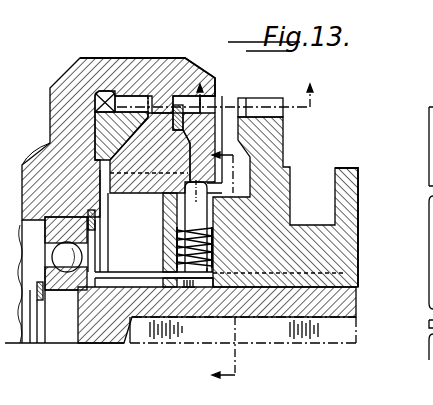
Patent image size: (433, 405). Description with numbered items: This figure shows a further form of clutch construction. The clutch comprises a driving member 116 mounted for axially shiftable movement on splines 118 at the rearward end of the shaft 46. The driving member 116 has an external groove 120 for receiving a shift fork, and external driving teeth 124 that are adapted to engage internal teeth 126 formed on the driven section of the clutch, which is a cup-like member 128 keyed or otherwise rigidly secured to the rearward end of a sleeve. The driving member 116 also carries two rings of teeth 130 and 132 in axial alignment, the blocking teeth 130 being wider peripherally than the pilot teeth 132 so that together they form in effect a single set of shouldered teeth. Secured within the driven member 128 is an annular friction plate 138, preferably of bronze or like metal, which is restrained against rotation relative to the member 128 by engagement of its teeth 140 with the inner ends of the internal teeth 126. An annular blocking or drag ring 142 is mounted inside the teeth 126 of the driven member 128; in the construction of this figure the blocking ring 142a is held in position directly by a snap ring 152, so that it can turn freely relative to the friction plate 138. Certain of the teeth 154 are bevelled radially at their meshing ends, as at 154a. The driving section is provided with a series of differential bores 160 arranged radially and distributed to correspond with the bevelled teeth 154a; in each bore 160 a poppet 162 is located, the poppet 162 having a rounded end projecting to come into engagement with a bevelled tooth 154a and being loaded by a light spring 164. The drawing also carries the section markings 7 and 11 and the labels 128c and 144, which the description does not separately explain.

The section line 7- 7 is at (216, 266).
The section line 11- 11 is at (218, 85).
The shaft 46 is at (58, 335).
The driving member 116 is at (341, 170).
The splines 118 is at (136, 276).
The external groove 120 is at (297, 224).
The external driving teeth 124 is at (256, 100).
The internal teeth 126 is at (163, 100).
The cup-like member 128 is at (47, 160).
The body portion 128c is at (180, 404).
The blocking teeth 130 is at (221, 200).
The pilot teeth 132 is at (162, 207).
The annular friction plate 138 is at (105, 137).
The teeth 140 is at (105, 104).
The blocking or drag ring 142 is at (196, 316).
The blocking ring 142a is at (157, 123).
The valve member 144 is at (118, 150).
The snap ring 152 is at (185, 97).
The teeth 154 is at (110, 197).
The bevelled teeth 154a is at (175, 137).
The differential bores 160 is at (173, 252).
The poppet 162 is at (218, 232).
The light spring 164 is at (217, 256).